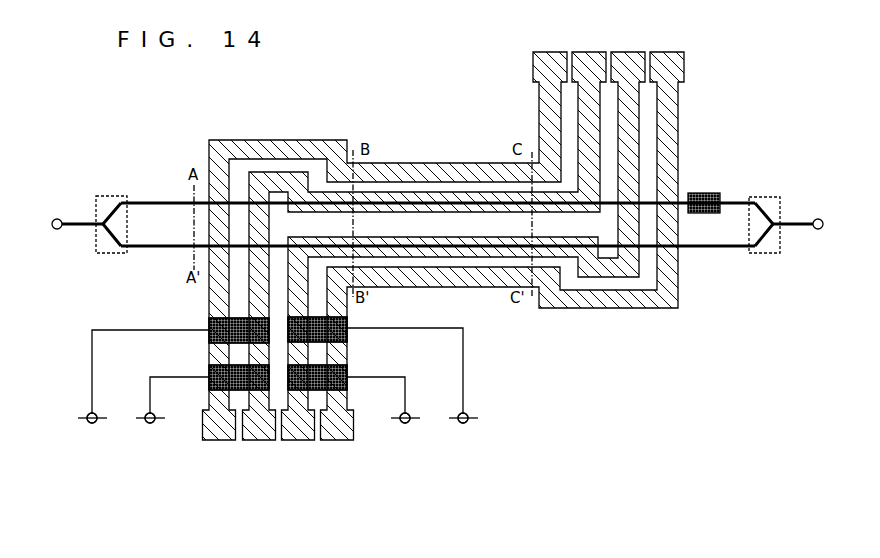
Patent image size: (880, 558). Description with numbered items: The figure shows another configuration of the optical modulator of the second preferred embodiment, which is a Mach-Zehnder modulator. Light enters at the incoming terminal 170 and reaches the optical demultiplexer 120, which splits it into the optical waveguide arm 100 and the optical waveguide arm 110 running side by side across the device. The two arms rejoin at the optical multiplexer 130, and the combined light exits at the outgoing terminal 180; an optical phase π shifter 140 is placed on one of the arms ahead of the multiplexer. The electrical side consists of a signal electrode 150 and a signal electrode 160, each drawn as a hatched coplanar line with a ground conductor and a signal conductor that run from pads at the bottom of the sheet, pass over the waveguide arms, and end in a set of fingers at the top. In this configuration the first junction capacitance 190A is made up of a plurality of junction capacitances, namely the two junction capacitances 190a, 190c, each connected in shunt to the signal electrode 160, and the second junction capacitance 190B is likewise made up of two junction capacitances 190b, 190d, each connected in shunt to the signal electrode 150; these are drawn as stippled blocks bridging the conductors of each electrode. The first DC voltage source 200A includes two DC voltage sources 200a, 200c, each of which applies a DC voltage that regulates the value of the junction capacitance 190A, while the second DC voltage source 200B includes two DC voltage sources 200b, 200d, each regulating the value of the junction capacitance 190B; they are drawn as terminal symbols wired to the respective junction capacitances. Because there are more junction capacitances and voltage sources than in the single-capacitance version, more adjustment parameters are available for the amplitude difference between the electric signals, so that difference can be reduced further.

The optical waveguide arm 100 is at (150, 203).
The optical waveguide arm 110 is at (150, 246).
The optical demultiplexer 120 is at (108, 196).
The optical multiplexer 130 is at (752, 197).
The optical phase π shifter 140 is at (706, 193).
The signal electrode 150 is at (273, 510).
The signal electrode 160 is at (353, 510).
The incoming terminal 170 is at (58, 218).
The outgoing terminal 180 is at (815, 219).
The junction capacitance 190a is at (347, 368).
The junction capacitance 190b is at (209, 368).
The junction capacitance 190c is at (347, 325).
The junction capacitance 190d is at (209, 322).
The first junction capacitance 190A is at (385, 348).
The second junction capacitance 190B is at (168, 346).
The DC voltage source 200a is at (408, 423).
The DC voltage source 200b is at (150, 423).
The DC voltage source 200c is at (468, 413).
The DC voltage source 200d is at (92, 423).
The first DC voltage source 200A is at (487, 435).
The second DC voltage source 200B is at (119, 456).